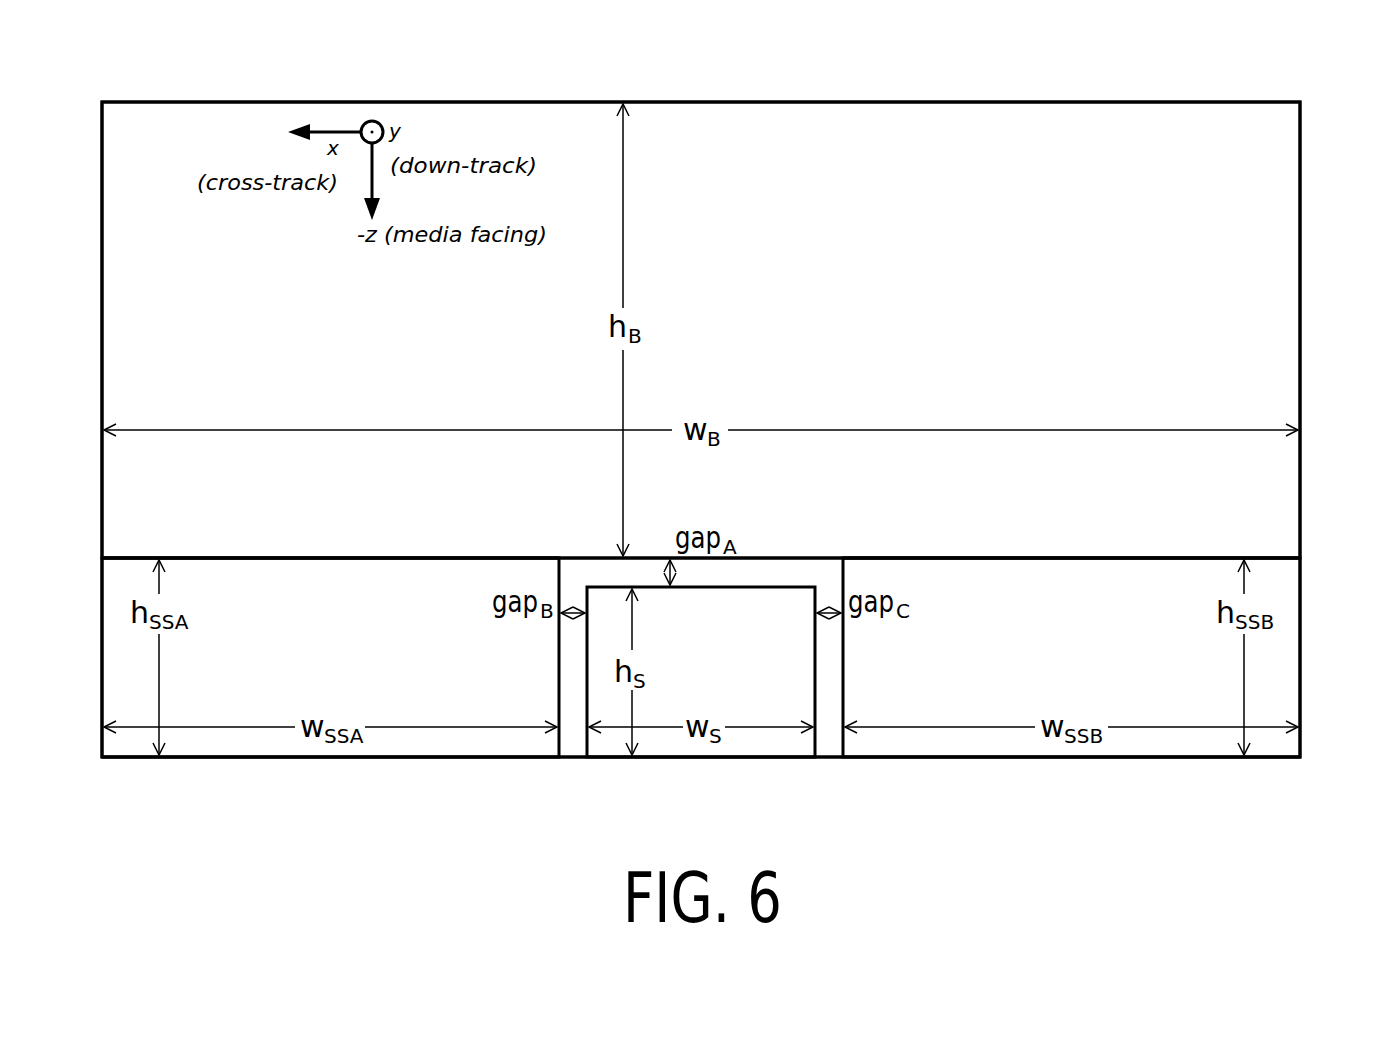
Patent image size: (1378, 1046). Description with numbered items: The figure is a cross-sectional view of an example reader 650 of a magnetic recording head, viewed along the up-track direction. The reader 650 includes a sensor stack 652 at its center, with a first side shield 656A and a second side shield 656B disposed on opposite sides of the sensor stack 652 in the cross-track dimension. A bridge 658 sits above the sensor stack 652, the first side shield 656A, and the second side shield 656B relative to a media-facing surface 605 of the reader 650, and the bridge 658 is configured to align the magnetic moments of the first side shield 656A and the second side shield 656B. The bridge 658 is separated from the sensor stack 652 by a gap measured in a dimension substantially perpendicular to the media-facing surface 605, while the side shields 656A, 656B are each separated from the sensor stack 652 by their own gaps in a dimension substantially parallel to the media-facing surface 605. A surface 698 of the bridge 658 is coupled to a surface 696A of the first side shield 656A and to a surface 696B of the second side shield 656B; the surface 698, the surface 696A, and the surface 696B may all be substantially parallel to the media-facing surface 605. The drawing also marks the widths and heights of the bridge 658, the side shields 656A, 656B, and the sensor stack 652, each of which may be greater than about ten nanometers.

The reader 650 is at (961, 62).
The bridge 658 is at (725, 346).
The surface of bridge 698 is at (327, 558).
The surface of first side shield 696A is at (341, 558).
The surface of second side shield 696B is at (1050, 558).
The first side shield 656A is at (363, 676).
The second side shield 656B is at (1107, 676).
The sensor stack 652 is at (725, 688).
The media-facing surface 605 is at (1130, 759).